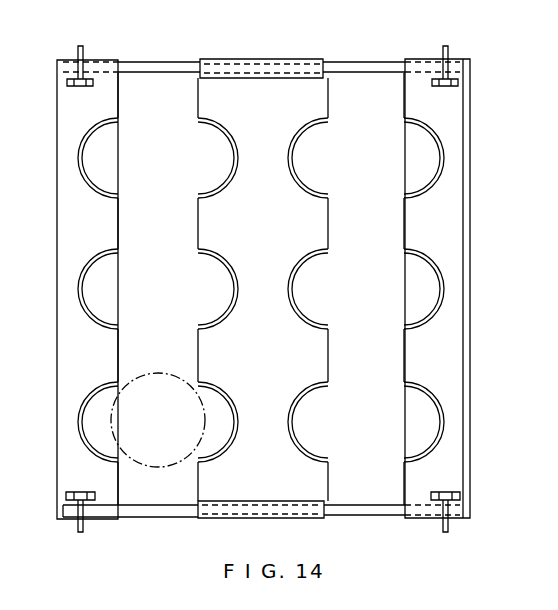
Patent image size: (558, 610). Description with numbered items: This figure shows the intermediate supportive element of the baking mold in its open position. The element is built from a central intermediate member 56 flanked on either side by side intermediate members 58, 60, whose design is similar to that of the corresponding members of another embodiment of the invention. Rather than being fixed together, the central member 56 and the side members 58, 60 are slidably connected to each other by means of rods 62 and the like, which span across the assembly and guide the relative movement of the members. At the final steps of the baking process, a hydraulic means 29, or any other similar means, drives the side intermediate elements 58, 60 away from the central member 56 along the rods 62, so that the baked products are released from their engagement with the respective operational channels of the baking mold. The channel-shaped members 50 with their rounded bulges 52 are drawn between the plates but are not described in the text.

The hydraulic means 29 is at (287, 510).
The channel member 50 is at (84, 165).
The semicylindrical bulge 52 is at (236, 291).
The central intermediate member 56 is at (205, 88).
The side intermediate member 58 is at (78, 113).
The side intermediate member 60 is at (448, 106).
The rods 62 is at (345, 61).